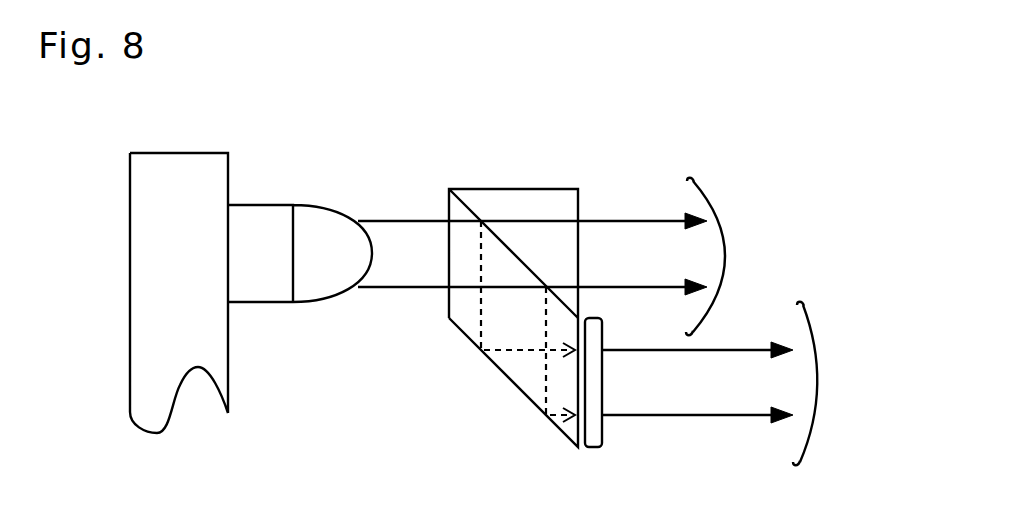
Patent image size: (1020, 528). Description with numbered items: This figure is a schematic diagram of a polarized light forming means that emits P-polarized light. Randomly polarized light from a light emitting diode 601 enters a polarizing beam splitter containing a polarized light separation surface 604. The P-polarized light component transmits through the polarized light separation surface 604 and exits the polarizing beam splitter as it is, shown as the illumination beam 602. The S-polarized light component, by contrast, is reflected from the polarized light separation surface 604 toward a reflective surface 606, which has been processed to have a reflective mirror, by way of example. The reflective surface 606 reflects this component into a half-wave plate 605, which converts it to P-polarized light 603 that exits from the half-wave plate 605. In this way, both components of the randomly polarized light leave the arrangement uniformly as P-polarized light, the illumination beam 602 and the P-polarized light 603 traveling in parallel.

The light emitting diode 601 is at (262, 203).
The illumination beam 602 is at (692, 179).
The P-polarized light 603 is at (787, 310).
The polarized light separation surface 604 is at (467, 205).
The half-wave plate 605 is at (592, 448).
The reflective surface 606 is at (462, 333).